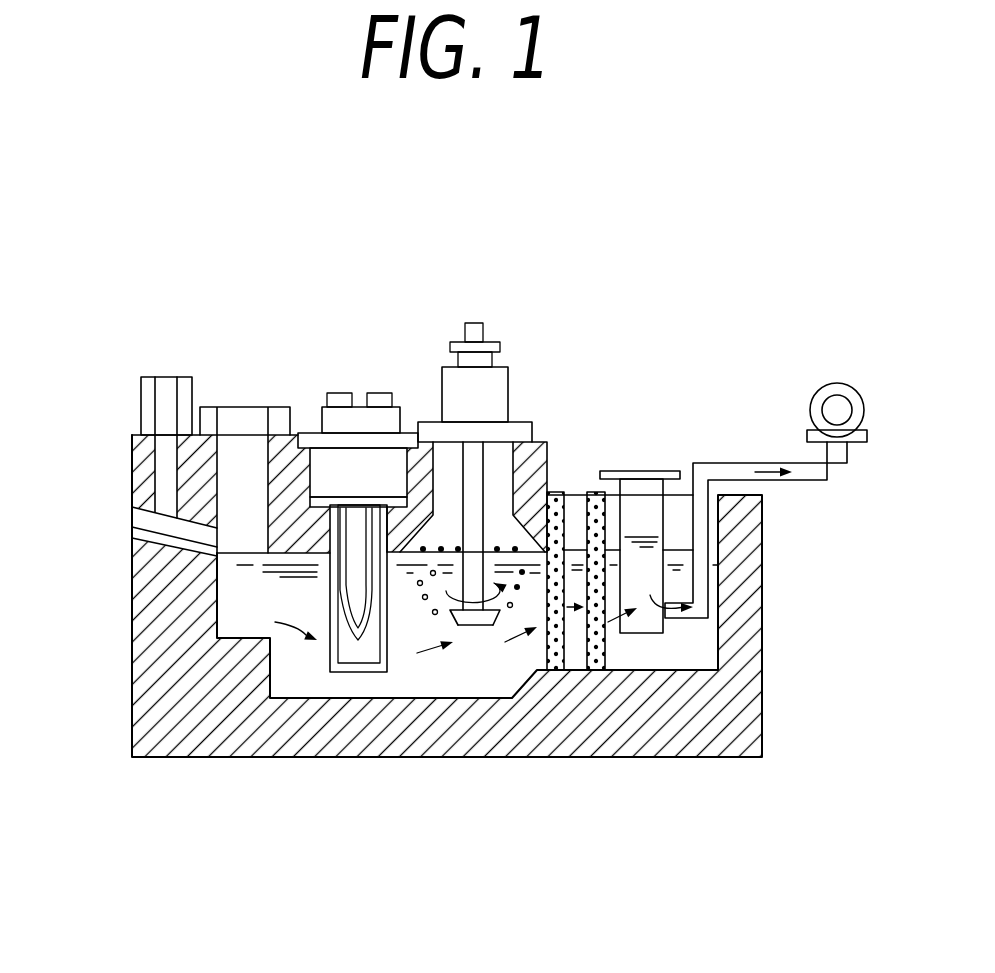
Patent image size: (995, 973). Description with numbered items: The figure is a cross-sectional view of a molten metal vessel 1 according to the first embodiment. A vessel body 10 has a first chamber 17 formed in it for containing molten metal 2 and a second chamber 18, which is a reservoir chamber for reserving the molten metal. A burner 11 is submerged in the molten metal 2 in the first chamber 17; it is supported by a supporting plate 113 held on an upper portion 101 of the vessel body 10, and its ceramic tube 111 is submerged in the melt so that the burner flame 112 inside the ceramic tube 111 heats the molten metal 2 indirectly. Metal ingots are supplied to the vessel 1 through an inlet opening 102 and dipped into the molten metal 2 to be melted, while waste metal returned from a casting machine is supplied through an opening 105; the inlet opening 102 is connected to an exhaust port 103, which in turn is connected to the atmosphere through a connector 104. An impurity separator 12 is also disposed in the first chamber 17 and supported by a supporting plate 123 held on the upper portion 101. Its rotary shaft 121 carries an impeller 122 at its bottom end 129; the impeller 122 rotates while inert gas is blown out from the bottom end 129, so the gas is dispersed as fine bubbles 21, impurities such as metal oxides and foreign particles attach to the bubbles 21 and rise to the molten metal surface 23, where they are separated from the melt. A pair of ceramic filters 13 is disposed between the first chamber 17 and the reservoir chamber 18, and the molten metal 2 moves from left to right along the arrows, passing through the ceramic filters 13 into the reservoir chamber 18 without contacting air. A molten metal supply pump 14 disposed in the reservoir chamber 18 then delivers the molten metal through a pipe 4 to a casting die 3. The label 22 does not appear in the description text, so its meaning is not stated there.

The molten metal vessel 1 is at (611, 234).
The molten metal 2 is at (253, 723).
The casting die 3 is at (837, 390).
The pipe 4 is at (820, 475).
The vessel body 10 is at (150, 670).
The burner 11 is at (343, 475).
The impurity separator 12 is at (480, 382).
The ceramic filters 13 is at (595, 650).
The molten metal supply pump 14 is at (640, 617).
The first chamber 17 is at (133, 723).
The second chamber 18 is at (710, 640).
The bubbles 21 is at (422, 600).
The liquid surface 22 is at (415, 557).
The molten metal surface 23 is at (540, 510).
The upper portion 101 is at (423, 440).
The inlet opening 102 is at (177, 530).
The exhaust port 103 is at (172, 467).
The connector 104 is at (152, 407).
The opening 105 is at (243, 467).
The ceramic tube 111 is at (350, 667).
The burner flame 112 is at (363, 578).
The supporting plate 113 is at (365, 443).
The rotary shaft 121 is at (473, 503).
The impeller 122 is at (482, 620).
The supporting plate 123 is at (483, 432).
The bottom end 129 is at (477, 620).